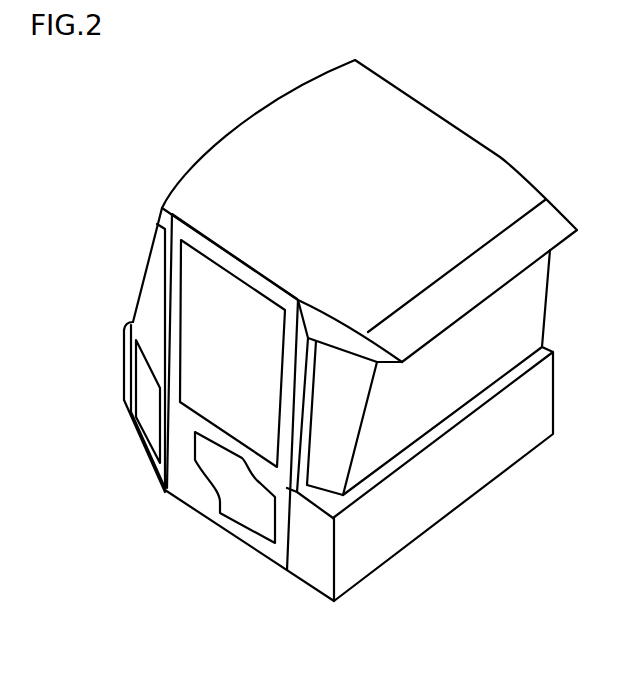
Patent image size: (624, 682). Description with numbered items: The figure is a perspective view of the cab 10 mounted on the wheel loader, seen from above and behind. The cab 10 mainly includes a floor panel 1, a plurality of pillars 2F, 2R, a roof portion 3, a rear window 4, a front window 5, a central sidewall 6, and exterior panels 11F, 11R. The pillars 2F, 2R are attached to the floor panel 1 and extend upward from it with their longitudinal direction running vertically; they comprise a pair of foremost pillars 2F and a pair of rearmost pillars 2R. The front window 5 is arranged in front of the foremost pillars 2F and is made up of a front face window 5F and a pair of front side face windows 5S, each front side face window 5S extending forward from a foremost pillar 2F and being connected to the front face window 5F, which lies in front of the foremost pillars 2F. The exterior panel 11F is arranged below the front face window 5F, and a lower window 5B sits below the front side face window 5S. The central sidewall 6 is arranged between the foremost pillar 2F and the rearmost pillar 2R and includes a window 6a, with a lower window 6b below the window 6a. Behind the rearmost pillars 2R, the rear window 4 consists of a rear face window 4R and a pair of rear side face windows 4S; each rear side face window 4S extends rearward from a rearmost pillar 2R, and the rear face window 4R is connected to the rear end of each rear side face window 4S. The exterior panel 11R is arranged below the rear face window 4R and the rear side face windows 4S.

The cab 10 is at (419, 81).
The roof portion 3 is at (417, 141).
The front window 5 is at (95, 231).
The front face window 5F is at (147, 245).
The front side face window 5S is at (160, 275).
The foremost pillar 2F is at (177, 297).
The exterior panel 11F is at (125, 328).
The lower window 5B is at (148, 411).
The floor panel 1 is at (163, 483).
The central sidewall 6 is at (213, 371).
The window 6a is at (228, 303).
The lower window 6b is at (230, 484).
The rearmost pillar 2R is at (298, 388).
The rear side face window 4S is at (309, 505).
The rear face window 4R is at (392, 419).
The rear window 4 is at (390, 624).
The exterior panel 11R is at (450, 478).